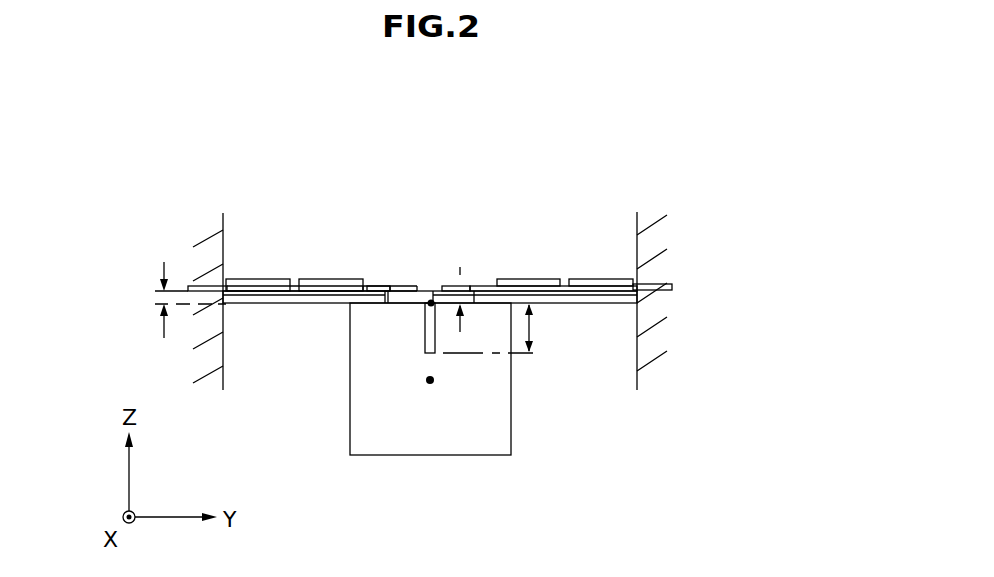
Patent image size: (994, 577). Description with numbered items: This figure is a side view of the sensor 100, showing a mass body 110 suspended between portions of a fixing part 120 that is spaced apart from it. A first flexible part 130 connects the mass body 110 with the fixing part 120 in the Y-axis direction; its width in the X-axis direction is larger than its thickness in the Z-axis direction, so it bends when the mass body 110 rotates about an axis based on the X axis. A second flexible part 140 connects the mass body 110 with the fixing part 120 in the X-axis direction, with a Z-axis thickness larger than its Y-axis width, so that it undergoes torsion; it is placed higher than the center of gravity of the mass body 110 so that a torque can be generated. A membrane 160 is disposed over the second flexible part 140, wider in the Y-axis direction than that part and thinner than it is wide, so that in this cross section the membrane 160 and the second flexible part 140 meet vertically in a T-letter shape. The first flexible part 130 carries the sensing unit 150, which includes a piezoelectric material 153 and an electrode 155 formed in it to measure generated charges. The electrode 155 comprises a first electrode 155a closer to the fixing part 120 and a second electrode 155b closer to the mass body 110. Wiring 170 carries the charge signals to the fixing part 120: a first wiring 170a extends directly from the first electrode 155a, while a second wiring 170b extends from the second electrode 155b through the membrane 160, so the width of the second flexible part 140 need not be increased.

The sensor 100 is at (194, 113).
The mass body 110 is at (468, 432).
The fixing part 120 is at (655, 242).
The first flexible part 130 is at (282, 300).
The second flexible part 140 is at (425, 333).
The sensing unit 150 is at (397, 173).
The piezoelectric material 153 is at (372, 280).
The electrode 155 is at (333, 220).
The first electrode 155a is at (263, 280).
The second electrode 155b is at (330, 280).
The membrane 160 is at (407, 298).
The wiring 170 is at (460, 276).
The first wiring 170a is at (672, 287).
The second wiring 170b is at (456, 288).